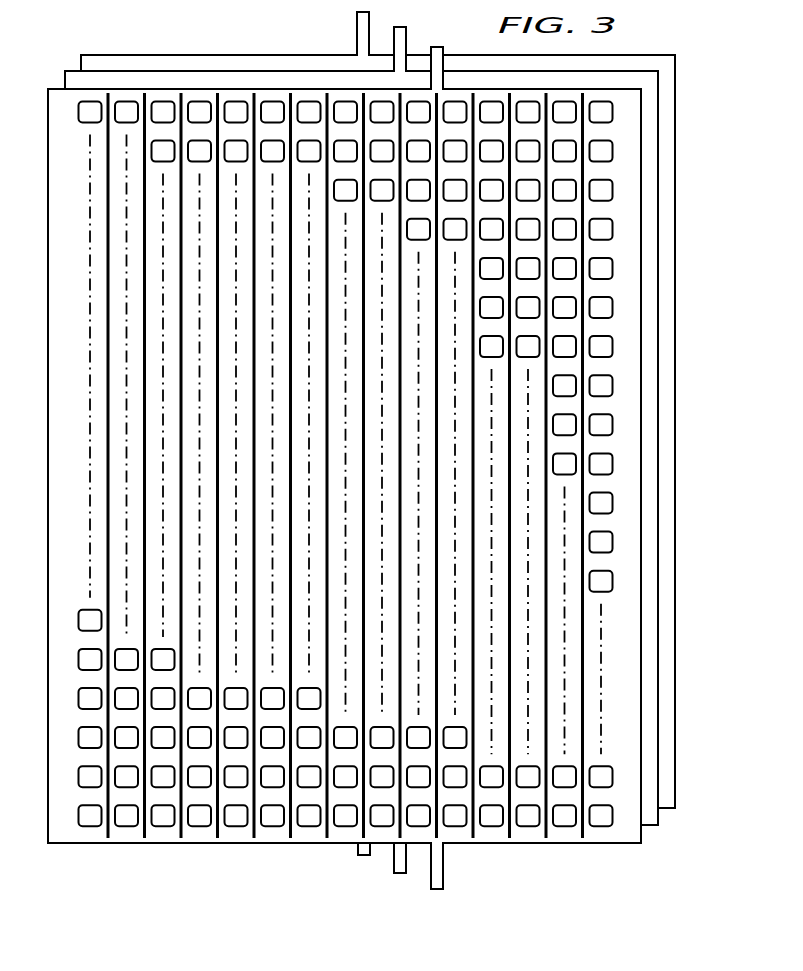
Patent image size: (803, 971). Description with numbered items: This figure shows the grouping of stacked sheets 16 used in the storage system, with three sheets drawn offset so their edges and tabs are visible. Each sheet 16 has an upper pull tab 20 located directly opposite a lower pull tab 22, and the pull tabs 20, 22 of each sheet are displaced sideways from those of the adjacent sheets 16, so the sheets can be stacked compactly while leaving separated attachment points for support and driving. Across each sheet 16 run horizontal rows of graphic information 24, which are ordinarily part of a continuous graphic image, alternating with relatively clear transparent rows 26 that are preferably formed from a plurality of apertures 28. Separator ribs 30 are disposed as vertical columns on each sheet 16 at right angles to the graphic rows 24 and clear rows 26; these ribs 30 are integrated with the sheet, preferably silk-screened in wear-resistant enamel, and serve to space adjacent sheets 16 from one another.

The sheet 16 is at (632, 130).
The upper pull tab 20 is at (436, 47).
The lower pull tab 22 is at (364, 855).
The rows of graphic information 24 is at (592, 288).
The relatively clear transparent rows 26 is at (612, 308).
The apertures 28 is at (453, 243).
The separator ribs 30 is at (107, 490).